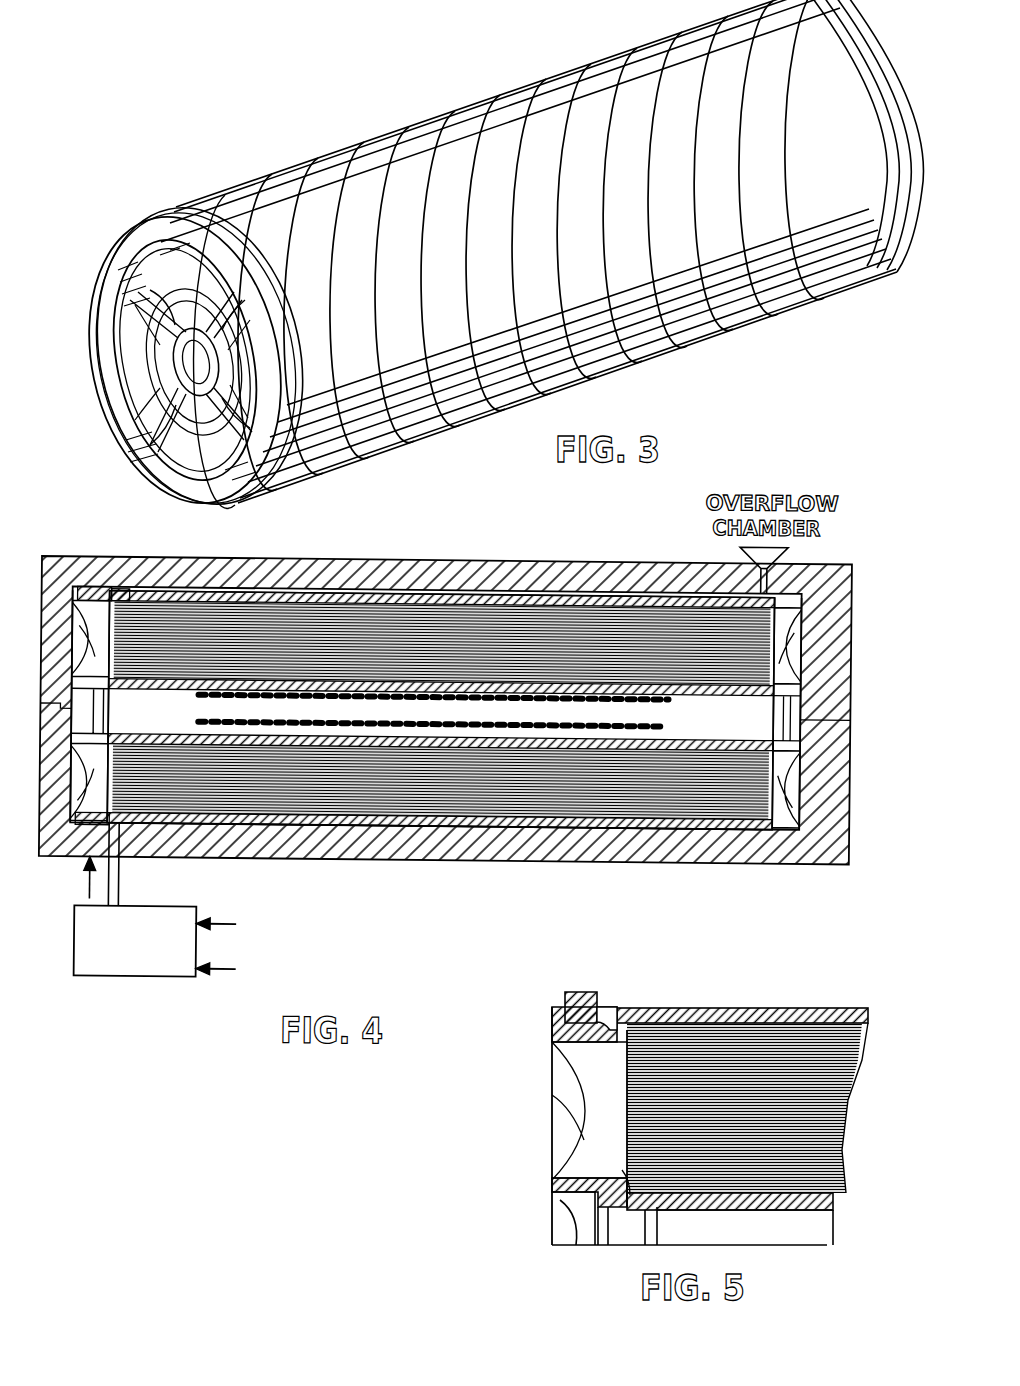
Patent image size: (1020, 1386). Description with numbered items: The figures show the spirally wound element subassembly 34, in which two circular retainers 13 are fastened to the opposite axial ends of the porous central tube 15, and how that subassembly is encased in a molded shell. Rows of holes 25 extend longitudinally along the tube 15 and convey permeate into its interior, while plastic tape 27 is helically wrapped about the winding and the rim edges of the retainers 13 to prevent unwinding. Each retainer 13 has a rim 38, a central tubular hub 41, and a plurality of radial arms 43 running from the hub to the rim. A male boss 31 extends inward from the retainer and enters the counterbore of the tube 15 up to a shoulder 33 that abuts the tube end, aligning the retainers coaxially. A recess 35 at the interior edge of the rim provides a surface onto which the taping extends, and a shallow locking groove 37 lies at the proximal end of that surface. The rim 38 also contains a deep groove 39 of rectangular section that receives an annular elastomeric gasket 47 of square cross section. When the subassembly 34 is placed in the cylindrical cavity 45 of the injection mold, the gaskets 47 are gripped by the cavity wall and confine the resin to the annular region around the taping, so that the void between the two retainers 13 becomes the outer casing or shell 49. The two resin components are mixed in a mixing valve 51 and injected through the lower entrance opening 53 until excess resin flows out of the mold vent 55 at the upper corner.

In FIG. 3, the circular retainer 13 is at (102, 262).
In FIG. 4, the porous central tube 15 is at (731, 724).
In FIG. 5, the porous central tube 15 is at (830, 1204).
In FIG. 4, the holes 25 is at (352, 692).
In FIG. 3, the plastic tape 27 is at (322, 162).
In FIG. 4, the male boss 31 is at (116, 698).
In FIG. 5, the male boss 31 is at (640, 1212).
In FIG. 5, the shoulder 33 is at (630, 1178).
In FIG. 3, the spirally wound element subassembly 34 is at (412, 104).
In FIG. 4, the spirally wound element subassembly 34 is at (437, 580).
In FIG. 4, the recess 35 is at (112, 588).
In FIG. 4, the locking groove 37 is at (766, 858).
In FIG. 5, the locking groove 37 is at (614, 1016).
In FIG. 3, the rim 38 is at (182, 212).
In FIG. 5, the deep groove 39 is at (552, 1012).
In FIG. 5, the central tubular hub 41 is at (552, 1218).
In FIG. 4, the radial arms 43 is at (804, 640).
In FIG. 5, the radial arms 43 is at (616, 1092).
In FIG. 4, the cylindrical cavity 45 is at (582, 590).
In FIG. 4, the annular elastomeric gaskets 47 is at (97, 582).
In FIG. 5, the annular elastomeric gaskets 47 is at (580, 992).
In FIG. 5, the outer casing or shell 49 is at (772, 1008).
In FIG. 4, the mixing valve 51 is at (128, 984).
In FIG. 4, the lower entrance opening 53 is at (120, 856).
In FIG. 4, the mold vent 55 is at (748, 572).